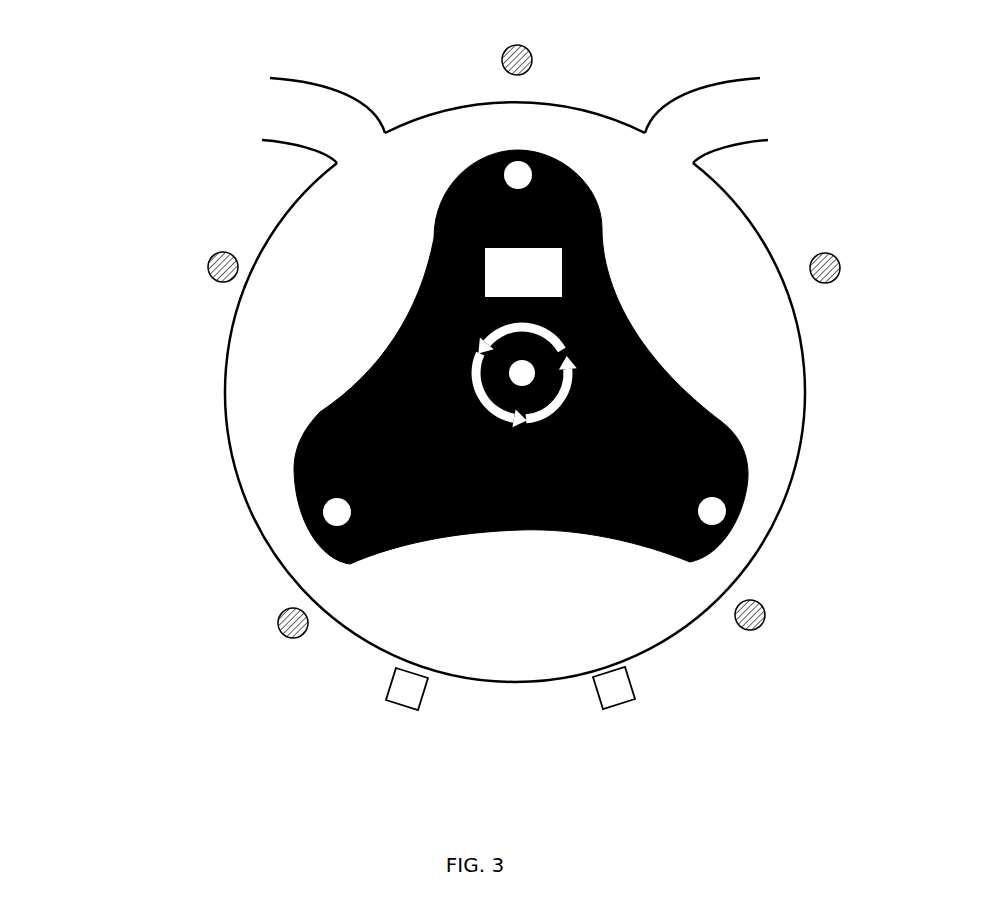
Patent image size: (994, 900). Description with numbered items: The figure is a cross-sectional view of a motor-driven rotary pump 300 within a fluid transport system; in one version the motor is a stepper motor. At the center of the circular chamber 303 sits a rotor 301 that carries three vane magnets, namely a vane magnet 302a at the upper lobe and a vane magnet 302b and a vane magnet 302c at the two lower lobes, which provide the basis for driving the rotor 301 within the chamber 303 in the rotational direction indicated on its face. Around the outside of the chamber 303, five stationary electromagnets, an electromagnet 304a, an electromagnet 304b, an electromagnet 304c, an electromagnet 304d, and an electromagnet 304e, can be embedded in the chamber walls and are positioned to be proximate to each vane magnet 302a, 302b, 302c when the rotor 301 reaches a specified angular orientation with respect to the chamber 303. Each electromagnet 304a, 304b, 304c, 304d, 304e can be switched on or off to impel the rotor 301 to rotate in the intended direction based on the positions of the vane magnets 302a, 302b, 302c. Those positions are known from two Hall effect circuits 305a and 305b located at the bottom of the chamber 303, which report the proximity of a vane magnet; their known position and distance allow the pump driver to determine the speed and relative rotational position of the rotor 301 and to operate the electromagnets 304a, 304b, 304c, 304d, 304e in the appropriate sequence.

The rotary pump 300 is at (114, 222).
The rotor 301 is at (521, 357).
The vane magnet 302a is at (515, 171).
The vane magnet 302b is at (716, 511).
The vane magnet 302c is at (333, 513).
The chamber 303 is at (252, 438).
The electromagnet 304a is at (530, 50).
The electromagnet 304b is at (840, 259).
The electromagnet 304c is at (762, 627).
The electromagnet 304d is at (283, 637).
The electromagnet 304e is at (213, 282).
The Hall effect circuit 305a is at (622, 702).
The Hall effect circuit 305b is at (397, 702).